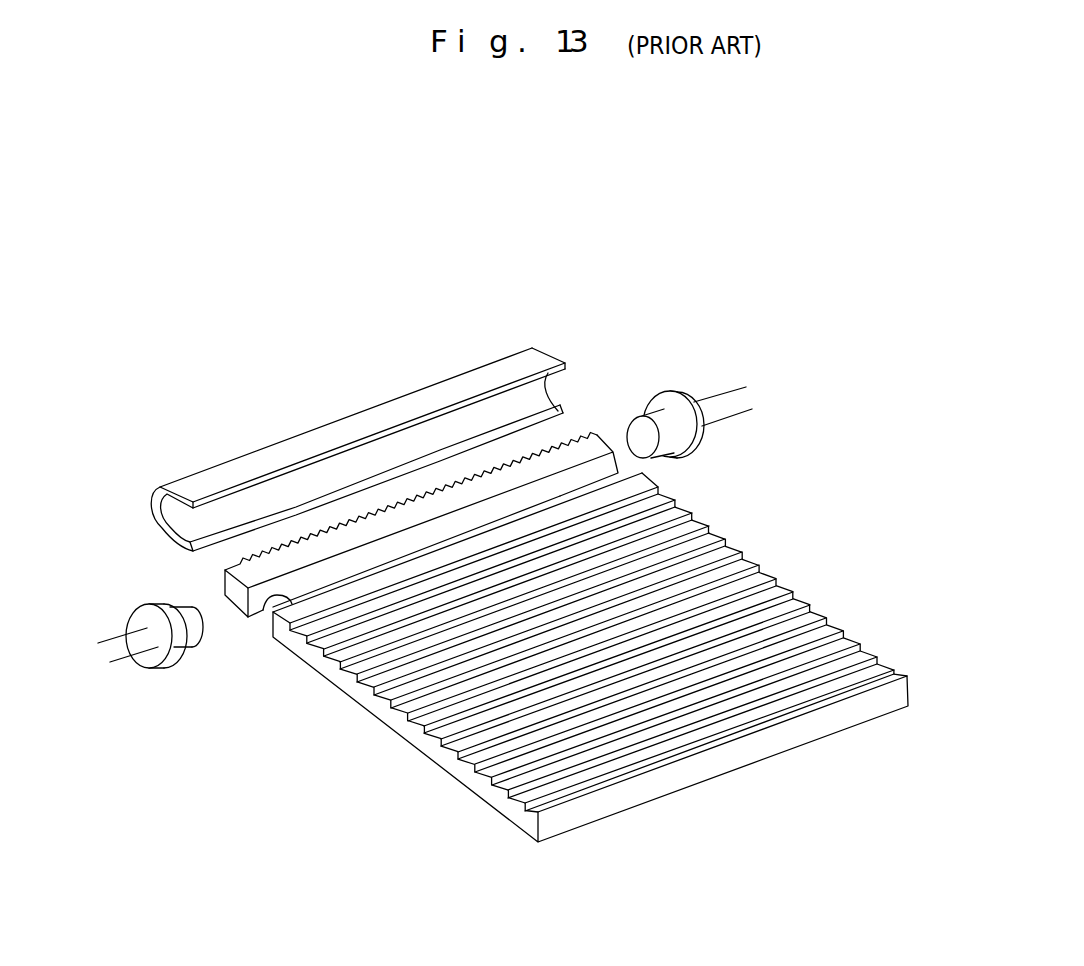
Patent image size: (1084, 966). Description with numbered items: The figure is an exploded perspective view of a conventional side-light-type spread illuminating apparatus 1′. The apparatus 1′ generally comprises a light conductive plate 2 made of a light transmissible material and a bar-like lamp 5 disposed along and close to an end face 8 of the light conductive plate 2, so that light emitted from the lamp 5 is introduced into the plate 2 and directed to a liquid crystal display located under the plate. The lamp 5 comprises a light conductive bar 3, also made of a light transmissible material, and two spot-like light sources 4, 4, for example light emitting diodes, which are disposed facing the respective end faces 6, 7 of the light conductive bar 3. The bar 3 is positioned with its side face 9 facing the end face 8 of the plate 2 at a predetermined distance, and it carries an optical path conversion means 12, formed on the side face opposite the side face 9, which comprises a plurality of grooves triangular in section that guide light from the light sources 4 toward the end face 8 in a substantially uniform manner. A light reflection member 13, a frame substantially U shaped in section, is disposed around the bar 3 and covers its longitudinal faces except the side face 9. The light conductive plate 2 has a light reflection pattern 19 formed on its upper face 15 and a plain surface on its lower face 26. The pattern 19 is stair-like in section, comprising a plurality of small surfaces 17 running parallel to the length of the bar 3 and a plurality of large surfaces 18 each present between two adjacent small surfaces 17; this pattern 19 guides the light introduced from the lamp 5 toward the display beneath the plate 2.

The spread illuminating apparatus 1′ is at (489, 356).
The light conductive plate 2 is at (441, 755).
The light conductive bar 3 is at (228, 563).
The spot-like light source 4 is at (112, 497).
The lamp 5 is at (412, 454).
The end face of light conductive bar 6 is at (237, 604).
The end face of light conductive bar 7 is at (606, 443).
The end face of light conductive plate 8 is at (272, 610).
The side face of light conductive bar 9 is at (327, 577).
The optical path conversion means 12 is at (418, 498).
The light reflection member 13 is at (252, 467).
The upper face of light conductive plate 15 is at (867, 673).
The small surface 17 is at (783, 583).
The large surface 18 is at (823, 613).
The light reflection pattern 19 is at (892, 465).
The lower face of light conductive plate 26 is at (720, 780).